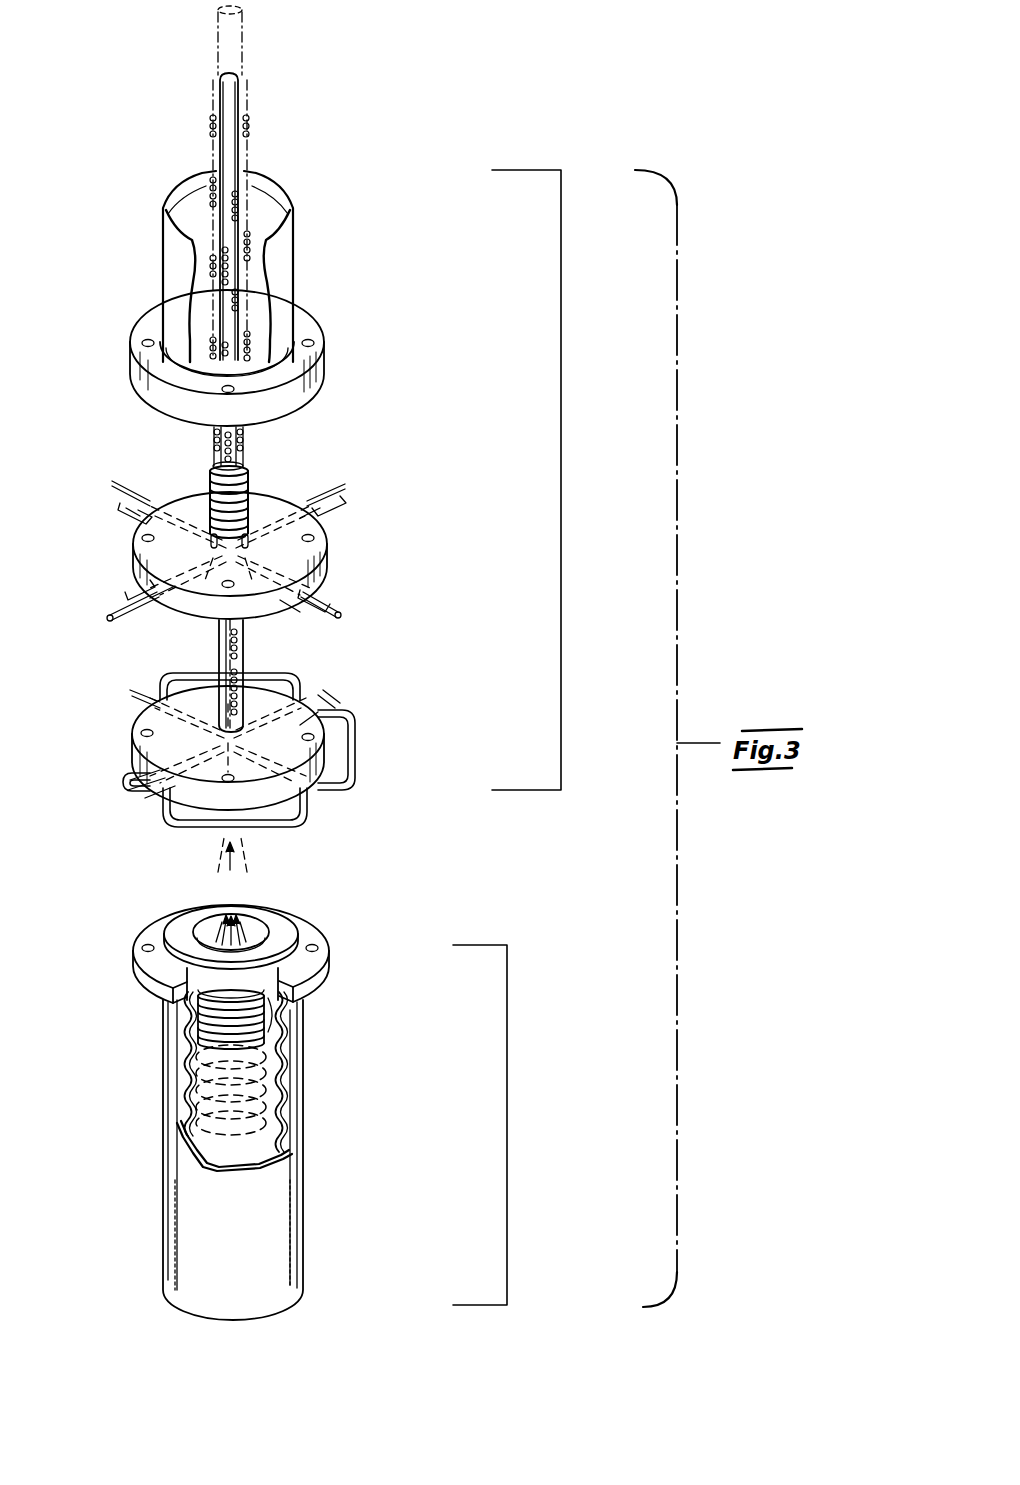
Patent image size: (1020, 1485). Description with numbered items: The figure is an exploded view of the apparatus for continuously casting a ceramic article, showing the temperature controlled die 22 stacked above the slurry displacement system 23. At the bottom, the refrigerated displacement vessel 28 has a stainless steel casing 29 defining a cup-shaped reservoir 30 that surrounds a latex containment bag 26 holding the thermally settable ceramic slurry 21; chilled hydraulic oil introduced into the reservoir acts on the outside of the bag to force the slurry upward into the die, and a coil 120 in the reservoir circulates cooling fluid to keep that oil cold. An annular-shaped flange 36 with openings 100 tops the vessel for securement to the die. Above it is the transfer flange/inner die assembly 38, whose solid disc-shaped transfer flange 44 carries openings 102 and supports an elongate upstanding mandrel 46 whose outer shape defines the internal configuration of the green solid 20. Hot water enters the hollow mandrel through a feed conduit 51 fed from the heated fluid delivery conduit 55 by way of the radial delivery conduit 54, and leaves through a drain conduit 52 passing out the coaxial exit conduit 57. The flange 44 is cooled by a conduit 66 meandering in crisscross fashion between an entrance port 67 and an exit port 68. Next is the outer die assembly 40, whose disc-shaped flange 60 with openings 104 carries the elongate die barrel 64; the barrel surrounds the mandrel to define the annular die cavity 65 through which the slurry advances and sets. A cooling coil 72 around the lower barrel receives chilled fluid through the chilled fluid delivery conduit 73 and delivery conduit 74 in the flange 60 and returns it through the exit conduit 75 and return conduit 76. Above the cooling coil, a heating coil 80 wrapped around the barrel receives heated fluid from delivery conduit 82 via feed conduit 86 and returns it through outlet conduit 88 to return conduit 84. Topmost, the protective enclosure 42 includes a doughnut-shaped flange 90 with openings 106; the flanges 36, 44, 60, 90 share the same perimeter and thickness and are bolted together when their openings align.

The green solid 20 is at (243, 65).
The heating coil 80 is at (250, 135).
The protective enclosure 42 is at (293, 239).
The openings 106 is at (142, 343).
The annular-shaped flange 90 is at (312, 400).
The die cavity 65 is at (248, 447).
The die barrel 64 is at (248, 462).
The cooling coil 72 is at (218, 483).
The chilled fluid delivery conduit 73 is at (112, 483).
The outlet conduit 88 is at (345, 489).
The delivery conduit 74 is at (142, 526).
The openings 104 is at (150, 541).
The return conduit 84 is at (320, 522).
The disc-shaped flange 60 is at (326, 568).
The feed conduit 86 is at (112, 612).
The delivery conduit 82 is at (182, 594).
The return conduit 76 is at (342, 614).
The exit conduit 75 is at (265, 583).
The mandrel 46 is at (245, 641).
The feed conduit 51 is at (228, 651).
The drain conduit 52 is at (243, 663).
The cooling conduit 66 is at (185, 673).
The exit conduit 57 is at (338, 713).
The exit port 68 is at (138, 703).
The openings 102 is at (140, 735).
The entrance port 67 is at (128, 782).
The delivery conduit 54 is at (130, 786).
The heated fluid delivery conduit 55 is at (150, 797).
The transfer flange 44 is at (303, 784).
The thermally settable ceramic slurry 21 is at (250, 891).
The openings 100 is at (142, 949).
The annular-shaped flange 36 is at (326, 976).
The cup-shaped reservoir 30 is at (200, 1002).
The coil 120 is at (288, 1042).
The containment bag 26 is at (256, 1100).
The stainless steel casing 29 is at (303, 1200).
The refrigerated displacement vessel 28 is at (305, 1262).
The outer die assembly 40 is at (428, 552).
The transfer flange/inner die assembly 38 is at (402, 753).
The temperature controlled die 22 is at (561, 482).
The slurry displacement system 23 is at (507, 1122).